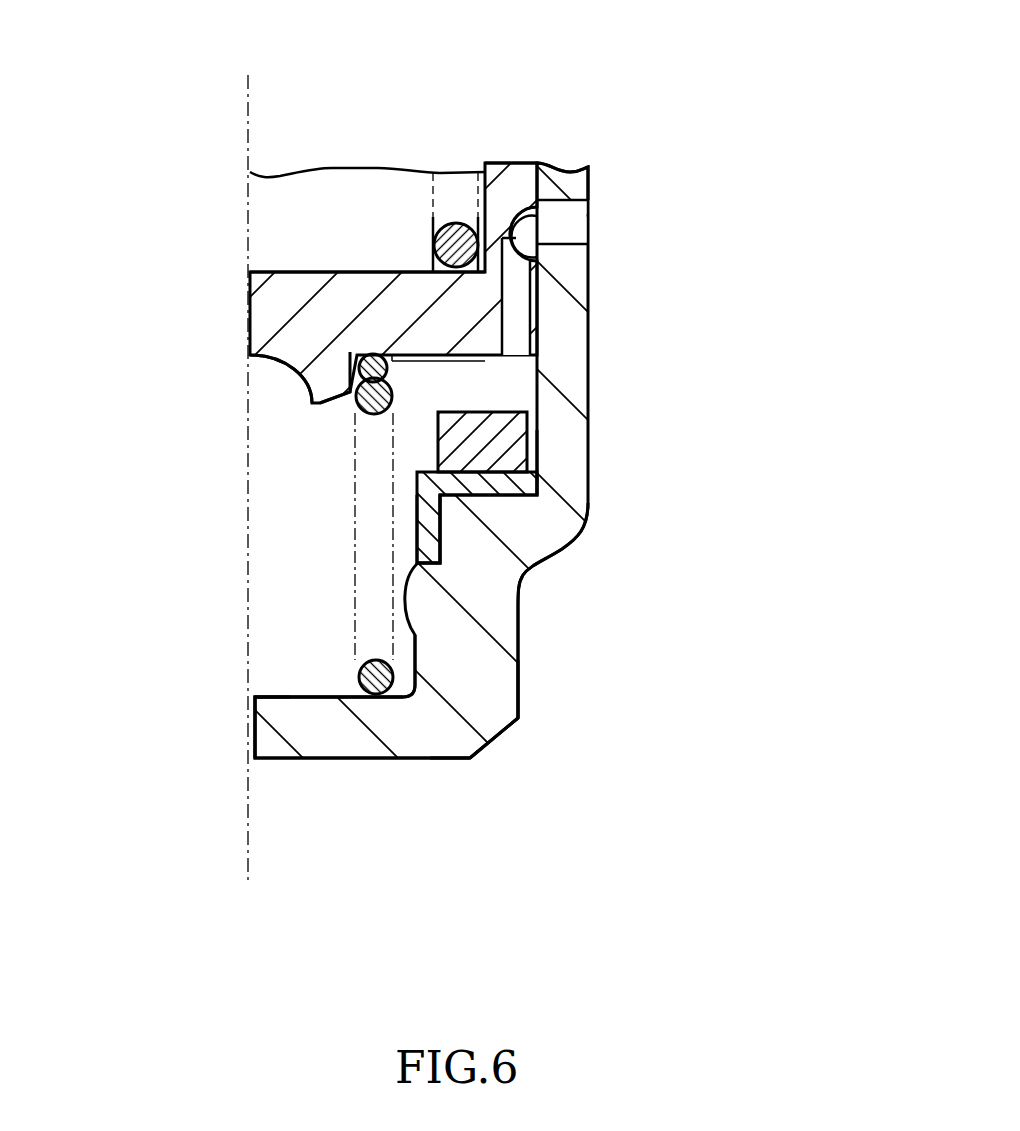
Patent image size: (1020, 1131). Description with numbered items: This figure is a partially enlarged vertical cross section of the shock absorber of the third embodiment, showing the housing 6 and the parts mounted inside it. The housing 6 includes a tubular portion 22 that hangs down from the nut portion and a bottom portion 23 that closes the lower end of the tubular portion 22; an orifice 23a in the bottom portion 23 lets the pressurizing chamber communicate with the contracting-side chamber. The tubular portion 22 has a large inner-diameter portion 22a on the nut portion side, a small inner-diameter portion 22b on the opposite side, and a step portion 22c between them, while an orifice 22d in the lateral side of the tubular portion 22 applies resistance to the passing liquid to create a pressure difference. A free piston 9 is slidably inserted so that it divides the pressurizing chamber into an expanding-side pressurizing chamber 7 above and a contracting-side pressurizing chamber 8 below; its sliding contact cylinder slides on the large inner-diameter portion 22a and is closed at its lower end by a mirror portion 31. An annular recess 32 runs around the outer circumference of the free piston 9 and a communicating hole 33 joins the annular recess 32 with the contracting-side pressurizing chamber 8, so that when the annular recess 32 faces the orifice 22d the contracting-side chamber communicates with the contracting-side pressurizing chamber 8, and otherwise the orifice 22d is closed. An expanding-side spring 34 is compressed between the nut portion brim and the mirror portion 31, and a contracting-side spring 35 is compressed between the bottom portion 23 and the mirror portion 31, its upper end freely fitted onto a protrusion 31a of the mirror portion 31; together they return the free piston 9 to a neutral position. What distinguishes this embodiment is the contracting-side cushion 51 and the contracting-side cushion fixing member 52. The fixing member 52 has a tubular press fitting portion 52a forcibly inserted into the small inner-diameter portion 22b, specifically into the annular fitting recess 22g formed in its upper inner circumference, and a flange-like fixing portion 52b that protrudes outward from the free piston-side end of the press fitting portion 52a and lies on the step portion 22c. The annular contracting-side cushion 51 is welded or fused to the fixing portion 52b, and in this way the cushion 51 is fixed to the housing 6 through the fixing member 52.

The housing 6 is at (627, 534).
The expanding-side pressurizing chamber 7 is at (275, 212).
The contracting-side pressurizing chamber 8 is at (290, 628).
The free piston 9 is at (521, 145).
The tubular portion 22 is at (628, 366).
The large inner-diameter portion 22a is at (590, 176).
The small inner-diameter portion 22b is at (500, 632).
The step portion 22c is at (537, 453).
The orifice 22d is at (600, 218).
The fitting recess 22g is at (518, 672).
The bottom portion 23 is at (333, 768).
The orifice 23a is at (255, 727).
The mirror portion 31 is at (241, 318).
The protrusion 31a is at (312, 408).
The annular recess 32 is at (538, 259).
The communicating hole 33 is at (512, 320).
The expanding-side spring 34 is at (453, 222).
The contracting-side spring 35 is at (473, 793).
The contracting-side cushion 51 is at (528, 432).
The contracting-side cushion fixing member 52 is at (392, 491).
The press fitting portion 52a is at (428, 518).
The fixing portion 52b is at (538, 477).